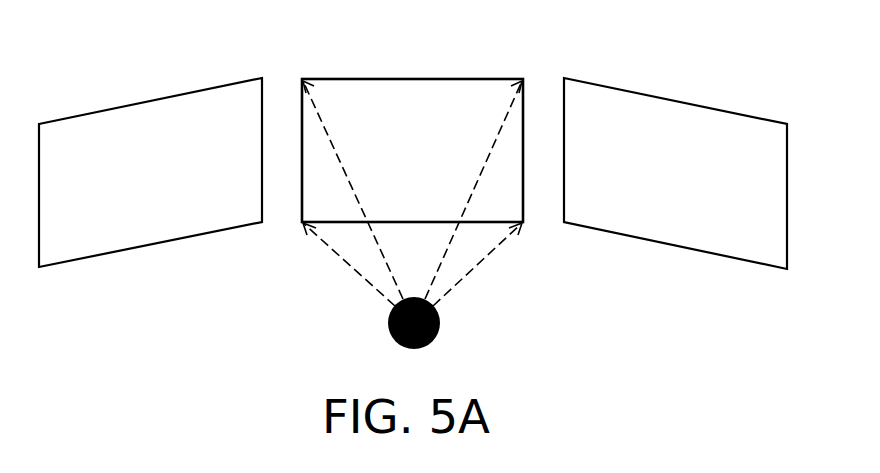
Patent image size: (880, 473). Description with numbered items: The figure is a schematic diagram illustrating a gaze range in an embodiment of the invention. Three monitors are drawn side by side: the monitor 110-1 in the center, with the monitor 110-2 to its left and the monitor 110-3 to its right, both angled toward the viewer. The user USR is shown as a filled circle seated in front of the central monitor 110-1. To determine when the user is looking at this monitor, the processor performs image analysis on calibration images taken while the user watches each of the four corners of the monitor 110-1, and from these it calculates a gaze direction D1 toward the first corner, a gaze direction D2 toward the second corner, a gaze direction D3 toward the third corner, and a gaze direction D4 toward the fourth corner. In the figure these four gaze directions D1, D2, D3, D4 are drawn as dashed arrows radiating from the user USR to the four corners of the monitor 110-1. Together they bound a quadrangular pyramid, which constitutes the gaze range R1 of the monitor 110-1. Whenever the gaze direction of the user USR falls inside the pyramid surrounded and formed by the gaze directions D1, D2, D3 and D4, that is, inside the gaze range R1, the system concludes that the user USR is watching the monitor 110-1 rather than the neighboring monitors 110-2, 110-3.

The monitor 110-1 is at (388, 79).
The monitor 110-2 is at (150, 100).
The monitor 110-3 is at (675, 100).
The gaze direction D1 is at (323, 123).
The gaze direction D2 is at (497, 140).
The gaze direction D3 is at (333, 253).
The gaze direction D4 is at (483, 260).
The gaze range R1 is at (405, 268).
The user USR is at (437, 333).